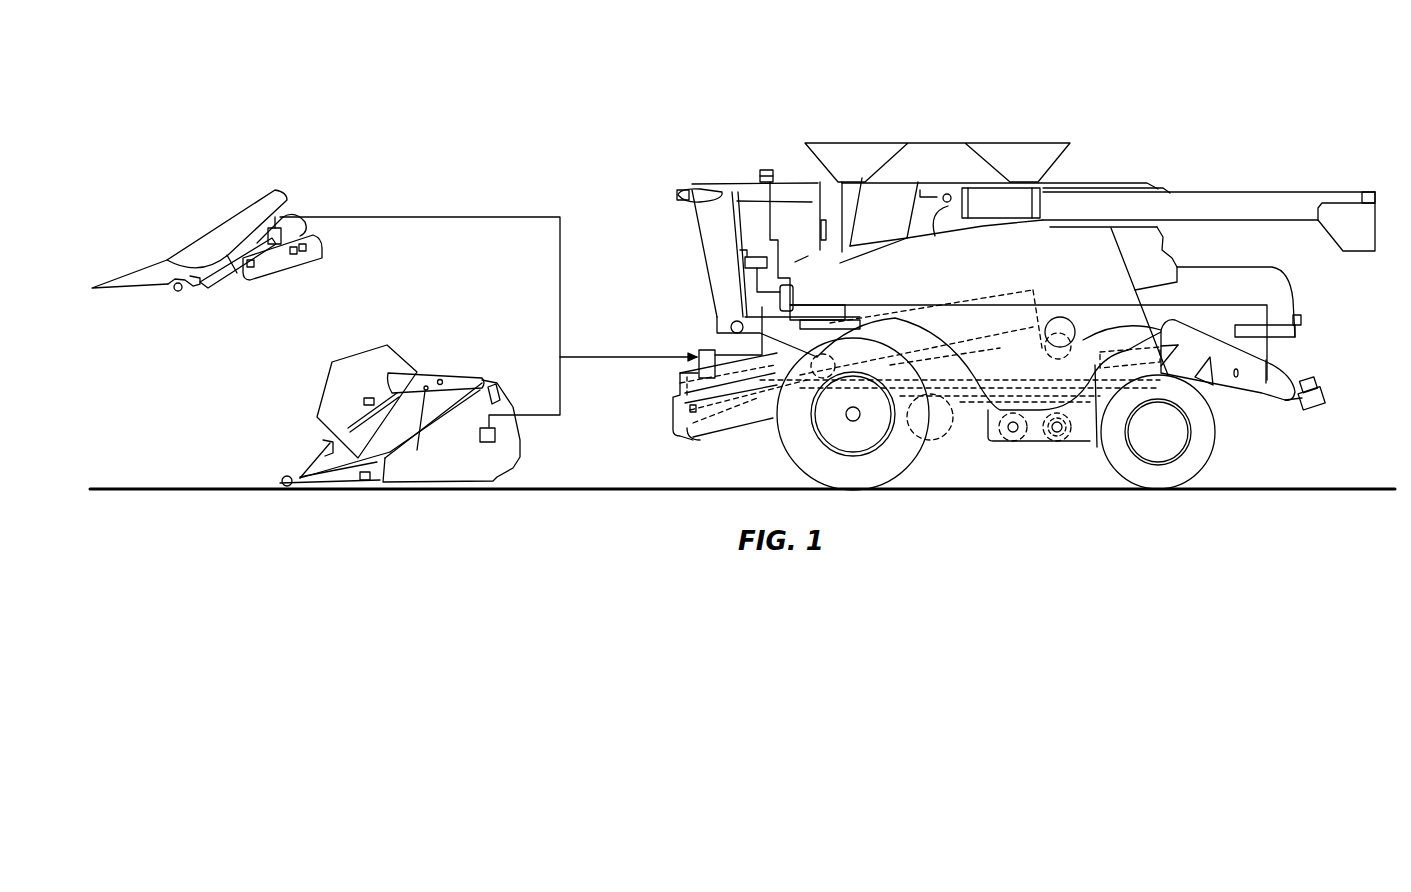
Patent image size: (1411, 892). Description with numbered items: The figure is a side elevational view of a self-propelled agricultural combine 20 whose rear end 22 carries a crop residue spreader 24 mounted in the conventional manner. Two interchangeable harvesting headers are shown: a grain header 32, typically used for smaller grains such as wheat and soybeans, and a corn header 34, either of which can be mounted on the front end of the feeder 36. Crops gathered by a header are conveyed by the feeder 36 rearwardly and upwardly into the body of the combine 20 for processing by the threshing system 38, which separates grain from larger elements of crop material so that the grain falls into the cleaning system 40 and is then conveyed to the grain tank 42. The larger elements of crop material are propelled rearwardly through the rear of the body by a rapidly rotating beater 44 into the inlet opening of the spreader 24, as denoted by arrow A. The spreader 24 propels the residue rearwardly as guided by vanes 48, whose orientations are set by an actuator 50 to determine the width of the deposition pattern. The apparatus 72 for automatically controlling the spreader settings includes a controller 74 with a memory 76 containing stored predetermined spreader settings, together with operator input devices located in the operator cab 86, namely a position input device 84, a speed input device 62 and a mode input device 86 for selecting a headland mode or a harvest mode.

The self-propelled agricultural combine 20 is at (1184, 78).
The rear end 22 is at (1293, 293).
The crop residue spreader 24 is at (1300, 350).
The grain header 32 is at (316, 392).
The corn header 34 is at (225, 210).
The feeder 36 is at (757, 433).
The threshing system 38 is at (1010, 292).
The cleaning system 40 is at (988, 446).
The grain tank 42 is at (1010, 148).
The beater 44 is at (1062, 315).
The vanes 48 is at (1325, 402).
The actuator 50 is at (1318, 383).
The speed input device 62 is at (740, 250).
The apparatus for automatically controlling the settings of the adjustable crop resi 72 is at (750, 236).
The controller 74 is at (805, 298).
The memory 76 is at (830, 324).
The position input device 84 is at (786, 298).
The mode input device 86 is at (712, 188).
The arrow A is at (1216, 340).